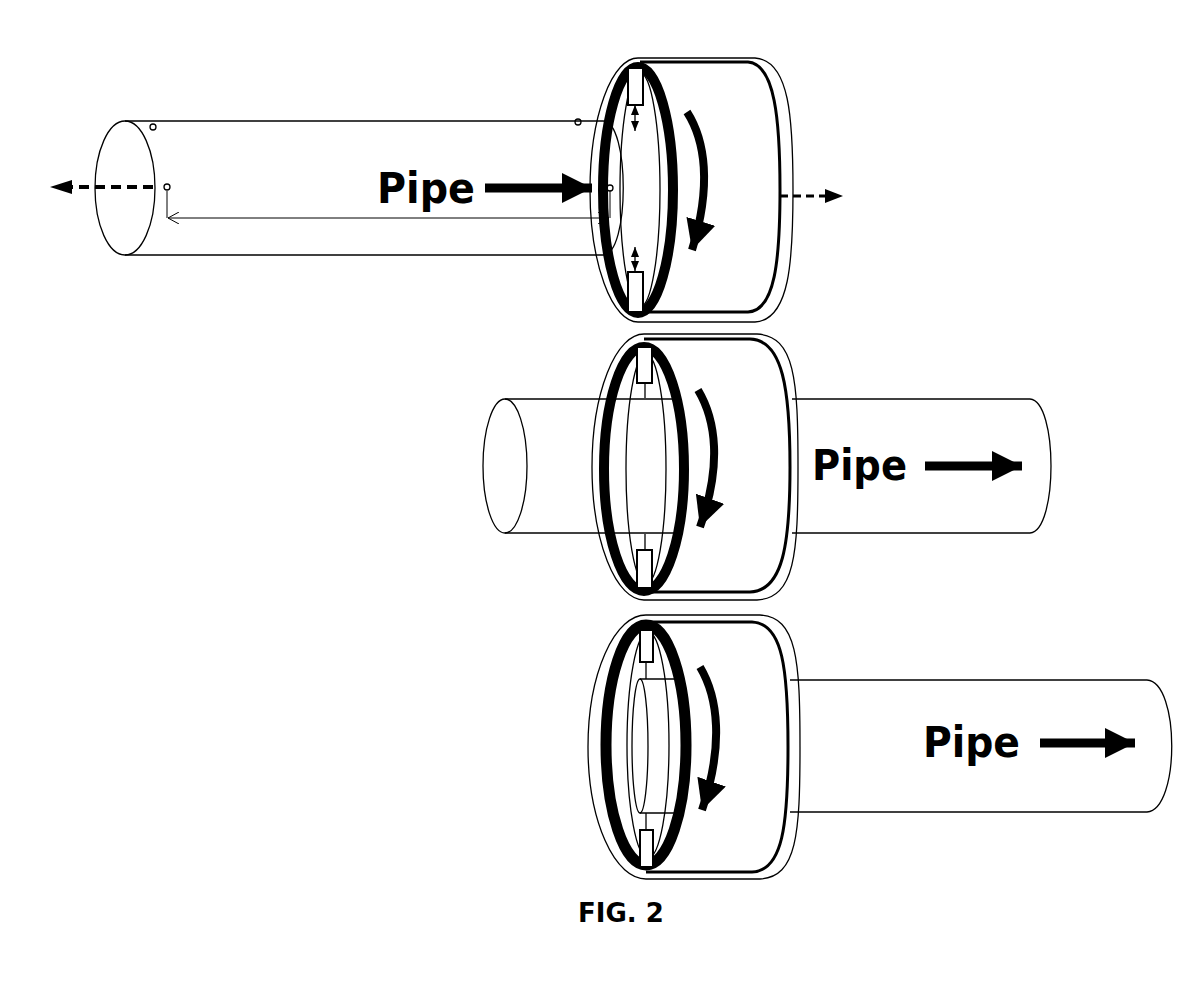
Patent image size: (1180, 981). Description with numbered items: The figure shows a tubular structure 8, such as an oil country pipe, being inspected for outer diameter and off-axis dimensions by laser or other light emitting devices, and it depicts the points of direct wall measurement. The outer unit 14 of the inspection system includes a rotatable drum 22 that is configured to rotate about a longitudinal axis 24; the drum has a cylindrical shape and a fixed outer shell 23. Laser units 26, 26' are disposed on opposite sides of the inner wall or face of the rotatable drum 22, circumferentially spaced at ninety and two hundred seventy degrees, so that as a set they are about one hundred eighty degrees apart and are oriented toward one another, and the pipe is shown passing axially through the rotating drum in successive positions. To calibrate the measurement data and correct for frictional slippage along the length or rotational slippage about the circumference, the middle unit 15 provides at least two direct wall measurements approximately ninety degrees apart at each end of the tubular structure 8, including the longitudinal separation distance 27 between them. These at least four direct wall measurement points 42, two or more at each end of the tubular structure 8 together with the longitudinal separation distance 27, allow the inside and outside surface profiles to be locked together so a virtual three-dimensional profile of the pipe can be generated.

The tubular structure 8 is at (128, 120).
The outer unit 14 is at (785, 178).
The middle unit 15 is at (145, 112).
The rotatable drum 22 is at (750, 267).
The fixed outer shell 23 is at (777, 86).
The longitudinal axis 24 is at (113, 195).
The laser unit 26 is at (587, 362).
The laser unit 26' is at (561, 570).
The longitudinal separation distance 27 is at (290, 220).
The direct wall measurement points 42 is at (175, 180).